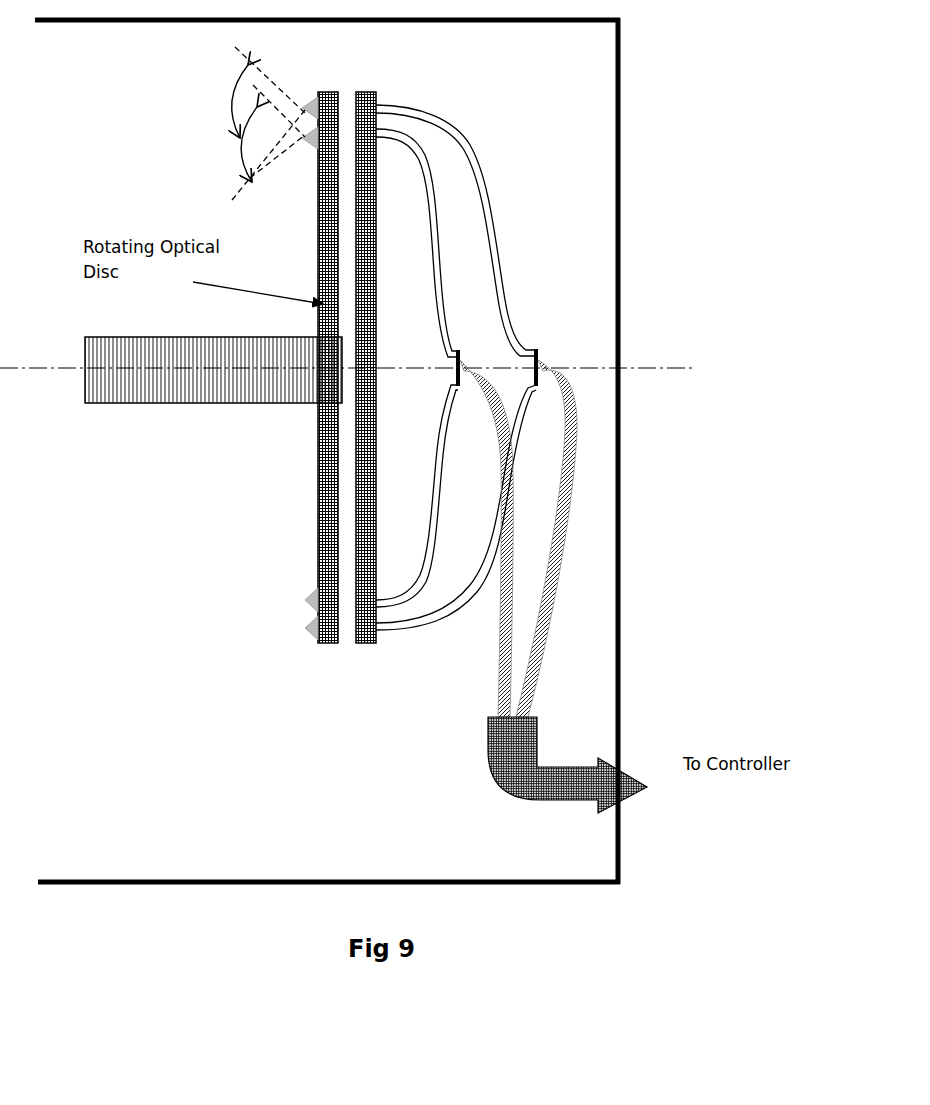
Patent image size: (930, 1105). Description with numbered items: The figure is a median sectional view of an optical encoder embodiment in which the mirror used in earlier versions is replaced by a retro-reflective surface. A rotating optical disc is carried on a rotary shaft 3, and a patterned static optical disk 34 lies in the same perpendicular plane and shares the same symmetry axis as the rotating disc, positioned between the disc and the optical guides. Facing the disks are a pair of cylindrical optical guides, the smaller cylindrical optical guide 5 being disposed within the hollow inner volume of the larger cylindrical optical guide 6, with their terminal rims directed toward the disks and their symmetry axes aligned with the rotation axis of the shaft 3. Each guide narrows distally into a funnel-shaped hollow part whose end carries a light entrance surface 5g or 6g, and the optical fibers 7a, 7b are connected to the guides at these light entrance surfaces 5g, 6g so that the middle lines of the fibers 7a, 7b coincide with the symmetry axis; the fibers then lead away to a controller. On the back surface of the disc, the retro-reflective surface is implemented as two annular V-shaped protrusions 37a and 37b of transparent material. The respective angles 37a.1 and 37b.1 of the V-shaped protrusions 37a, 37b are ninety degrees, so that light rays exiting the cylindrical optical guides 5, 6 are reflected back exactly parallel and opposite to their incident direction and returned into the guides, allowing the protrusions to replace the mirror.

The rotary shaft 3 is at (130, 408).
The patterned static optical disk 34 is at (362, 448).
The cylindrical optical guide 5 is at (460, 265).
The cylindrical optical guide 6 is at (527, 287).
The light entrance surface 5g is at (462, 362).
The light entrance surface 6g is at (543, 360).
The optical fiber 7a is at (538, 672).
The optical fiber 7b is at (522, 624).
The annular V-shaped protrusion 37a is at (302, 106).
The annular V-shaped protrusion 37b is at (293, 137).
The angle of V-shaped protrusion 37a.1 is at (230, 87).
The angle of V-shaped protrusion 37b.1 is at (237, 160).